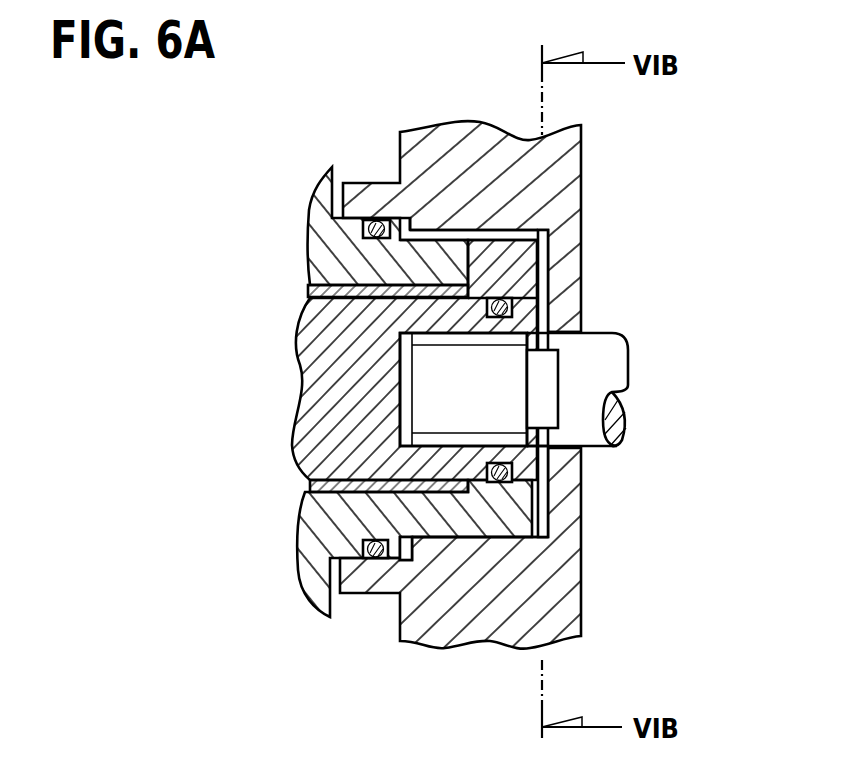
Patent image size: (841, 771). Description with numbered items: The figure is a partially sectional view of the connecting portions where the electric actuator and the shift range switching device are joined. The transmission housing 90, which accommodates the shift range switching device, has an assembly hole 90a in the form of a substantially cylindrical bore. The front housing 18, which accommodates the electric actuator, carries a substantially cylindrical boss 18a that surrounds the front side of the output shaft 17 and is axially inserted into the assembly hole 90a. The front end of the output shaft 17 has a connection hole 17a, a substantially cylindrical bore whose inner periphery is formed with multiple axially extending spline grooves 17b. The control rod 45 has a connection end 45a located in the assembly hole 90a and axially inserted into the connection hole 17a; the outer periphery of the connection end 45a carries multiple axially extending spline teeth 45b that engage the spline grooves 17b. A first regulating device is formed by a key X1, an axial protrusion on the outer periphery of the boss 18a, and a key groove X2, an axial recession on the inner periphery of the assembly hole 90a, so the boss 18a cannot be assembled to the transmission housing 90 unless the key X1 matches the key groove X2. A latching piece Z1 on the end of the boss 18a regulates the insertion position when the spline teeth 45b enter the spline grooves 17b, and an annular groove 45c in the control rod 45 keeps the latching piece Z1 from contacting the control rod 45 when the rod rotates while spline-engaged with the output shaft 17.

The output shaft 17 is at (365, 350).
The connection hole 17a is at (410, 383).
The spline grooves 17b is at (517, 500).
The front housing 18 is at (322, 186).
The boss 18a is at (430, 507).
The control rod 45 is at (592, 372).
The connection end 45a is at (430, 397).
The spline teeth 45b is at (532, 455).
The annular groove 45c is at (547, 398).
The transmission housing 90 is at (416, 161).
The assembly hole 90a is at (452, 527).
The key X1 is at (457, 236).
The key groove X2 is at (484, 238).
The latching piece Z1 is at (580, 333).